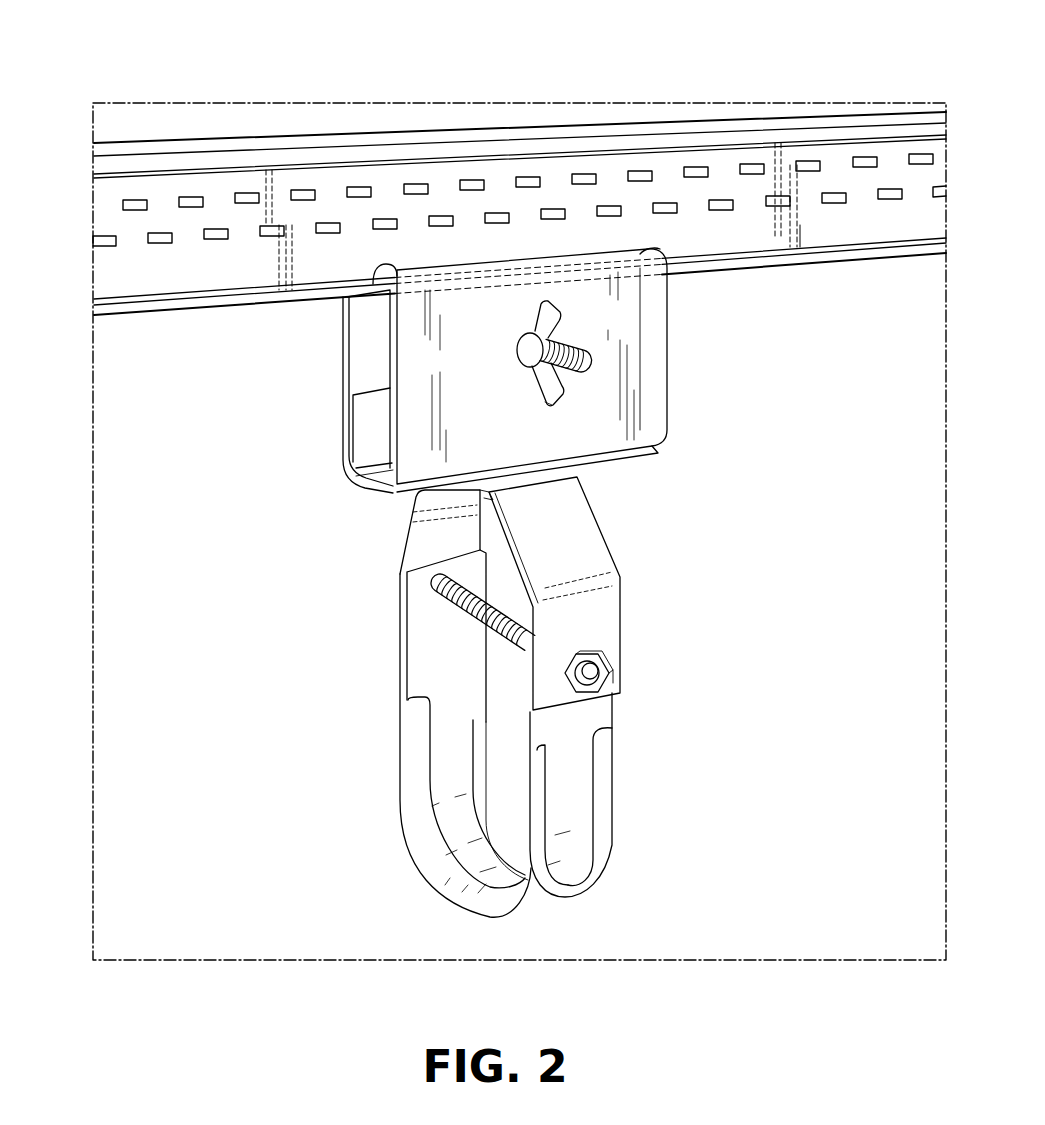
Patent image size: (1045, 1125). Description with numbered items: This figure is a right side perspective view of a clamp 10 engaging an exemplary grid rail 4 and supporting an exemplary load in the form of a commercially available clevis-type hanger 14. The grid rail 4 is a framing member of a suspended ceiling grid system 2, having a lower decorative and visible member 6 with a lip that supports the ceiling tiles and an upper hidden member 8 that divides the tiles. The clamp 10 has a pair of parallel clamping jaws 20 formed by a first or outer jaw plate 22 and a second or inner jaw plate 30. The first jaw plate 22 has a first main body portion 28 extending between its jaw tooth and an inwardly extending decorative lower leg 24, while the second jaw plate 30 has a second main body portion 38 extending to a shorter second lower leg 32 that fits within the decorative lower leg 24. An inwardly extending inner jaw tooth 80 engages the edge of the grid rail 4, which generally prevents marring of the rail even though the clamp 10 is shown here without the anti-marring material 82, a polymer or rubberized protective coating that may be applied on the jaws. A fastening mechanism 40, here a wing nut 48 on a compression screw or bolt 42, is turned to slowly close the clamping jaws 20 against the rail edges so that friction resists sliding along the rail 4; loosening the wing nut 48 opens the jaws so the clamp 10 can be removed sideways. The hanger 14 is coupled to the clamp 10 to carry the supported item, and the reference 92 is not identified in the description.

The ceiling grid system 2 is at (269, 90).
The grid rail 4 is at (487, 225).
The lower member 6 is at (154, 302).
The upper member 8 is at (446, 168).
The clamp 10 is at (512, 354).
The hanger 14 is at (607, 630).
The parallel clamping jaws 20 is at (518, 354).
The first jaw plate 22 is at (363, 410).
The decorative lower leg 24 is at (371, 490).
The first main body portion 28 is at (640, 408).
The second jaw plate 30 is at (653, 387).
The second lower leg 32 is at (377, 465).
The second main body portion 38 is at (565, 437).
The fastening mechanism 40 is at (520, 367).
The compression screw or bolt 42 is at (591, 365).
The wing nut 48 is at (568, 398).
The inner jaw tooth 80 is at (381, 275).
The anti-marring material 82 is at (643, 257).
The flange 92 is at (640, 322).